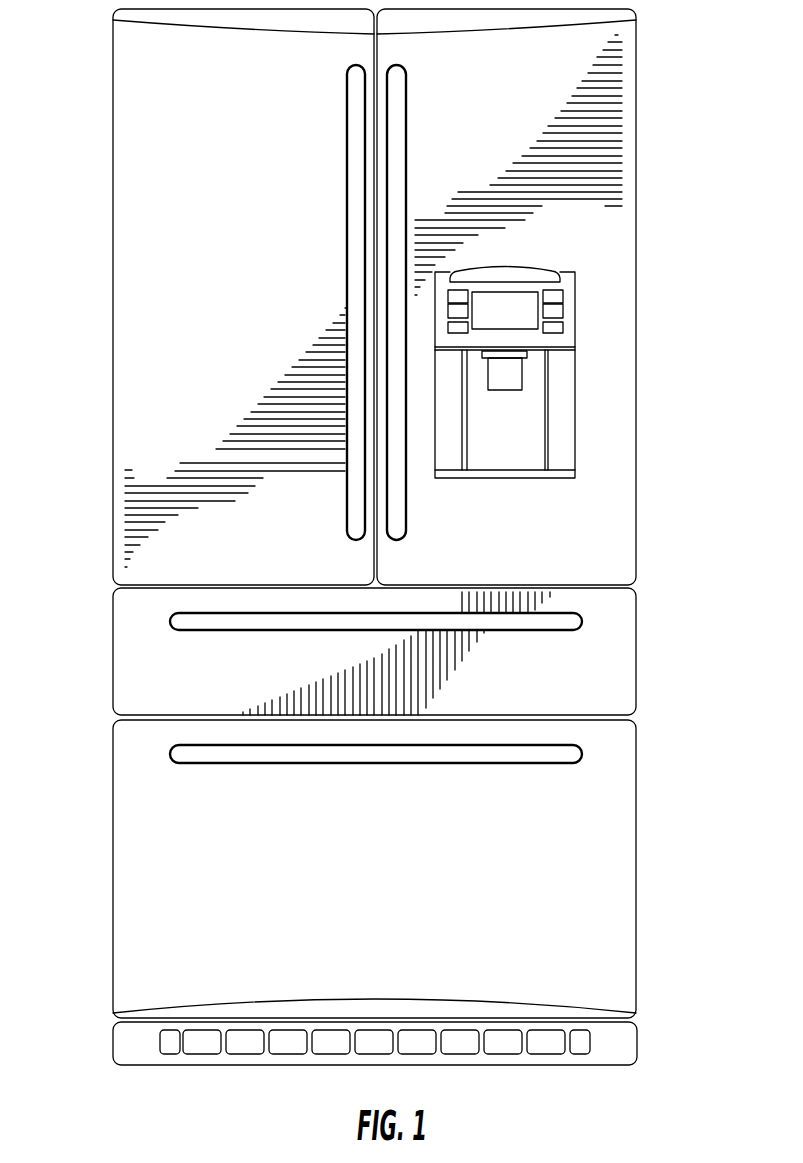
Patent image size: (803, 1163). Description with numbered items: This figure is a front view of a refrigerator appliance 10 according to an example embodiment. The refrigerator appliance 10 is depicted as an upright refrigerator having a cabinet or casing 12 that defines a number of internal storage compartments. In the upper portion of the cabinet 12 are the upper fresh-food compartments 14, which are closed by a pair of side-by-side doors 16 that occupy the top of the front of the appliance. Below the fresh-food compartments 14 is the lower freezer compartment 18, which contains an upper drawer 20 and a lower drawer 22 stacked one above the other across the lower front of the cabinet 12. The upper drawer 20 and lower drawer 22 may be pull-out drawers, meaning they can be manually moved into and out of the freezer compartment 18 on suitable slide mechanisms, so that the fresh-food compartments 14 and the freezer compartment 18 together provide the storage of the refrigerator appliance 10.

The refrigerator appliance 10 is at (686, 134).
The cabinet or casing 12 is at (637, 417).
The upper fresh-food compartments 14 is at (178, 242).
The doors 16 is at (182, 379).
The lower freezer compartment 18 is at (584, 659).
The upper drawer 20 is at (165, 684).
The lower drawer 22 is at (364, 887).